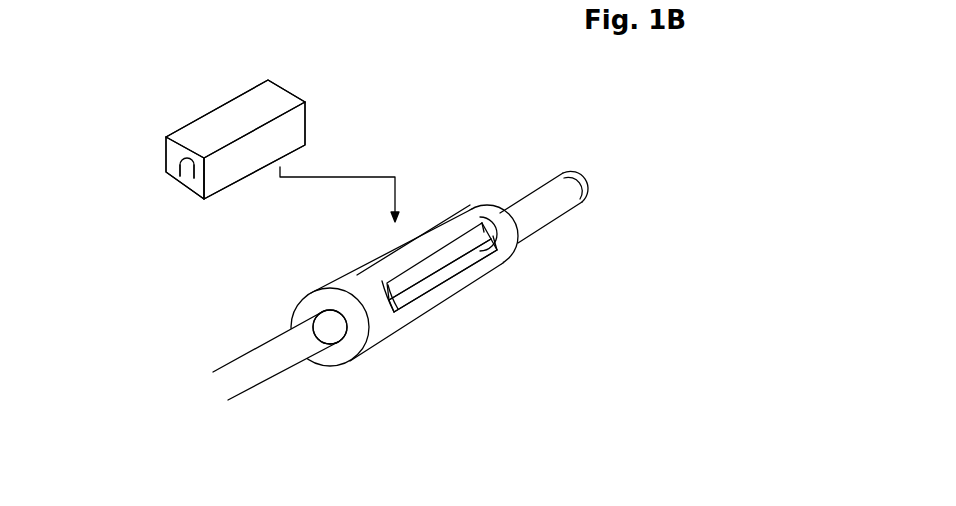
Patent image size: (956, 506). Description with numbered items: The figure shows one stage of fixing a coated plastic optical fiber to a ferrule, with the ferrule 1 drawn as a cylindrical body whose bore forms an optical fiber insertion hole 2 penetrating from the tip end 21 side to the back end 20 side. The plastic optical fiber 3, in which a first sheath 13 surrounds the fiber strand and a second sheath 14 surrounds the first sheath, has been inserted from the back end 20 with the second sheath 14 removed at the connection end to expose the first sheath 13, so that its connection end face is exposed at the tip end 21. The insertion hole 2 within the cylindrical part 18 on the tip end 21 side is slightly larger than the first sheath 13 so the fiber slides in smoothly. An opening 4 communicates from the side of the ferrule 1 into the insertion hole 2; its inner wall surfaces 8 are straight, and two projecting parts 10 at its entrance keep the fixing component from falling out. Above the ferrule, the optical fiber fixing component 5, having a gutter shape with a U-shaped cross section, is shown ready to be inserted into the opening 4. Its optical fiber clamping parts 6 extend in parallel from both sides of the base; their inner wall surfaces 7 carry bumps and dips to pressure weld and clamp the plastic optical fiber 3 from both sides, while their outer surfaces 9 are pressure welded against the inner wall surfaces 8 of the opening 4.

The ferrule 1 is at (347, 281).
The optical fiber insertion hole 2 is at (341, 347).
The plastic optical fiber 3 is at (244, 28).
The opening 4 is at (450, 218).
The optical fiber fixing component 5 is at (148, 162).
The optical fiber clamping parts 6 is at (181, 176).
The inner wall surfaces 7 is at (183, 178).
The inner wall surfaces 8 is at (450, 232).
The outer surfaces 9 is at (207, 112).
The projecting parts 10 is at (478, 208).
The first sheath 13 is at (447, 262).
The second sheath 14 is at (341, 338).
The cylindrical part 18 is at (568, 207).
The back end 20 is at (300, 312).
The tip end 21 is at (587, 177).